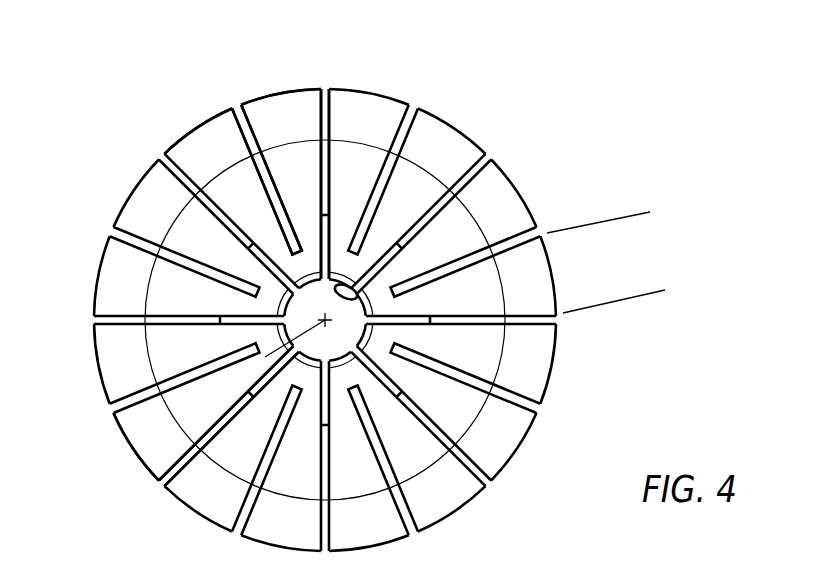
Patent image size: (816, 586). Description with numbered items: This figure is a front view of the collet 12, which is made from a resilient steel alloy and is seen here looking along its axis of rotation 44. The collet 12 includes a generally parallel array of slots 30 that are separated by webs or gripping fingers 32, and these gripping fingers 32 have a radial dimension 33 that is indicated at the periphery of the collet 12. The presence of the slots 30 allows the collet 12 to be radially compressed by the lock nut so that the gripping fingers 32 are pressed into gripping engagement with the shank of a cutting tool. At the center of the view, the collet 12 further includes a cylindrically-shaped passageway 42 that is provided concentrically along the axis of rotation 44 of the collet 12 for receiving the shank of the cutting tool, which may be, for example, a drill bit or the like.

The collet 12 is at (110, 183).
The slots 30 is at (323, 87).
The gripping fingers 32 is at (290, 190).
The radial dimension 33 is at (615, 223).
The cylindrically-shaped passageway 42 is at (363, 277).
The axis of rotation 44 is at (143, 452).